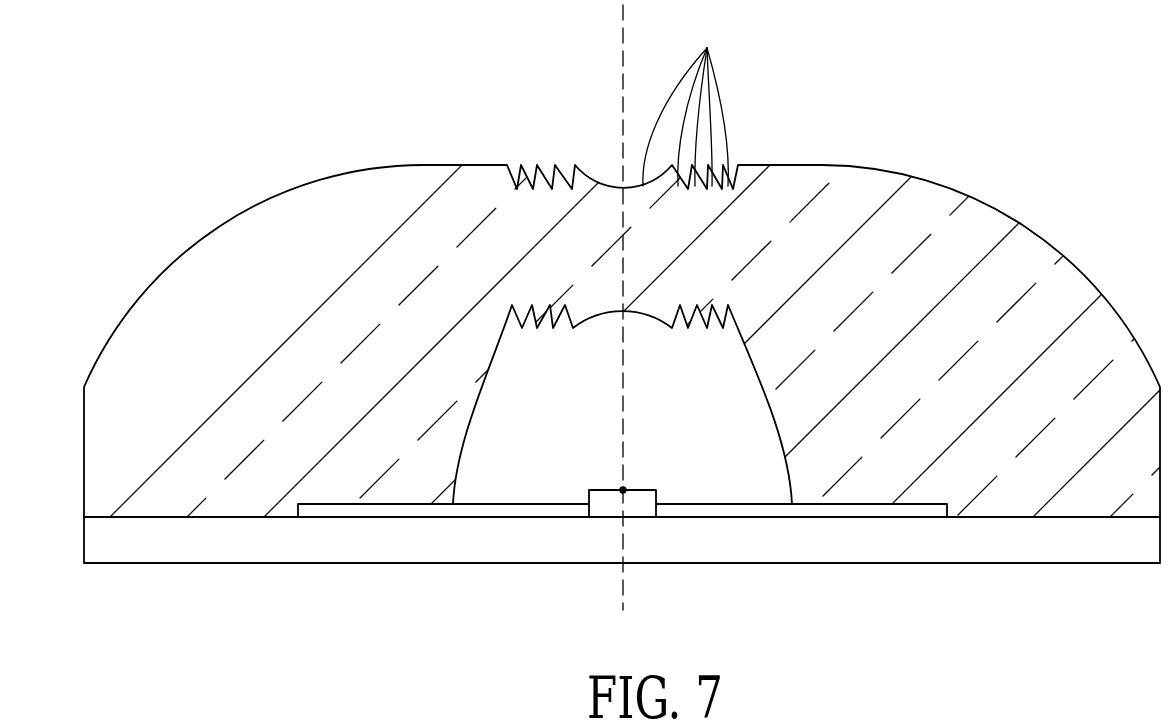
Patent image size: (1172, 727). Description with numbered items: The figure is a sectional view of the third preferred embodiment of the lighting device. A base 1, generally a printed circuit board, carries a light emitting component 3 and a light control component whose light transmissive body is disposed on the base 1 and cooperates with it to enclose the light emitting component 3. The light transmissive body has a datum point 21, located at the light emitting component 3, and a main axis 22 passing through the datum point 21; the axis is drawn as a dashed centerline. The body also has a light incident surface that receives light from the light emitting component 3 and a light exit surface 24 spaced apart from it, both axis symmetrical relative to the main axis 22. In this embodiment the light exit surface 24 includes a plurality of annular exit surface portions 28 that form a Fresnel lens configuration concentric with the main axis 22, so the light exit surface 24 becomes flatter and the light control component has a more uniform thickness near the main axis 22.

The base 1 is at (388, 545).
The light emitting component 3 is at (648, 508).
The datum point 21 is at (623, 490).
The main axis 22 is at (623, 48).
The light exit surface 24 is at (210, 233).
The annular exit surface portions 28 is at (685, 98).